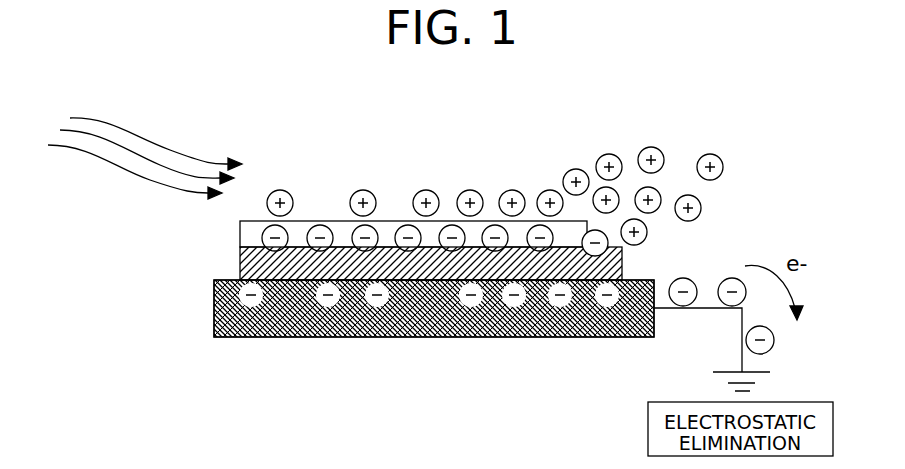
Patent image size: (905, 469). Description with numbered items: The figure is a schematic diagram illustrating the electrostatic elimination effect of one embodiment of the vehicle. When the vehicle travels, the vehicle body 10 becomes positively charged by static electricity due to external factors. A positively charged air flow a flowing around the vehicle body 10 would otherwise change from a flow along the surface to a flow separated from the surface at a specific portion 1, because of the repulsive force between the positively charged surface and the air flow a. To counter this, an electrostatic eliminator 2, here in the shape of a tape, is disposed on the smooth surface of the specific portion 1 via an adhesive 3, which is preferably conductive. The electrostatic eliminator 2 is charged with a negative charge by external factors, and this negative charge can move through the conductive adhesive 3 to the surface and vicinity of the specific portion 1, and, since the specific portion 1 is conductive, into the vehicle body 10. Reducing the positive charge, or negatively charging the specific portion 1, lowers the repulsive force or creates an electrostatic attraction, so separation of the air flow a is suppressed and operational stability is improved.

The specific portion 1 is at (214, 305).
The electrostatic eliminator 2 is at (240, 233).
The adhesive 3 is at (240, 260).
The vehicle body 10 is at (611, 140).
The air flow a is at (190, 143).